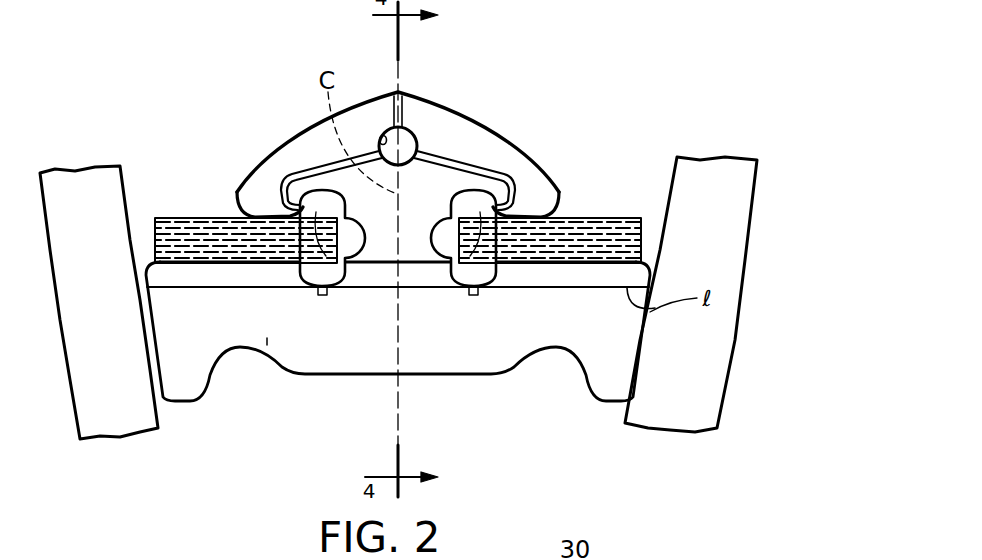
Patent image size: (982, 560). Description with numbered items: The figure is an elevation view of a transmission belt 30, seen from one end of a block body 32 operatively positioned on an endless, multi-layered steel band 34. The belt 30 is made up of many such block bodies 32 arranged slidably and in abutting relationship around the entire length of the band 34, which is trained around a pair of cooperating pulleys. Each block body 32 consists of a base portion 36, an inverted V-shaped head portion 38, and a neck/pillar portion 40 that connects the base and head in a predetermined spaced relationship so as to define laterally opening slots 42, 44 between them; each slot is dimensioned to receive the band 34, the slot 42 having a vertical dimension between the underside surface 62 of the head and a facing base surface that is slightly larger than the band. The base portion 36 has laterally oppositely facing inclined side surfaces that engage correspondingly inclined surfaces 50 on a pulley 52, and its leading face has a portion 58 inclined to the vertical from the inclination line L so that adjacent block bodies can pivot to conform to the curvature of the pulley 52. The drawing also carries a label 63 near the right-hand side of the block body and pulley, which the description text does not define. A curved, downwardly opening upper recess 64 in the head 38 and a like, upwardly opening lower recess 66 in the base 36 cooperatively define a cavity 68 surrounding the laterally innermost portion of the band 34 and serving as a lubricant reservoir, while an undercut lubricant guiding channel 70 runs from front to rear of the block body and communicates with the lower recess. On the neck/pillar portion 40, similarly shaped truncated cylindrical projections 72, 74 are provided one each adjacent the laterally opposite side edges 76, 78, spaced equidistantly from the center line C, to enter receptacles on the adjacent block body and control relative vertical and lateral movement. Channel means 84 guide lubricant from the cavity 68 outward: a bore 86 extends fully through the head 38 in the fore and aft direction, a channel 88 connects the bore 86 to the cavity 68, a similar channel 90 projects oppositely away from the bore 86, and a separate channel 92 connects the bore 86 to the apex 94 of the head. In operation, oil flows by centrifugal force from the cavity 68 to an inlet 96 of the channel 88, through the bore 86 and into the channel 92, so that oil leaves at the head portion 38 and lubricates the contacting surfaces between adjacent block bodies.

The transmission belt 30 is at (690, 133).
The block body 32 is at (464, 162).
The endless multi-layered steel band 34 is at (163, 222).
The base portion 36 is at (467, 358).
The inverted V-shaped head portion 38 is at (437, 122).
The neck/pillar portion 40 is at (480, 176).
The slot 42 is at (576, 222).
The slot 44 is at (242, 213).
The inclined surface 50 is at (162, 428).
The pulley 52 is at (119, 339).
The inclined portion of leading face 58 is at (267, 347).
The underside surface of the head 62 is at (560, 194).
The rail edge 63 is at (637, 243).
The upper recess 64 is at (500, 210).
The lower recess 66 is at (451, 282).
The cavity 68 is at (479, 292).
The undercut lubricant guiding channel 70 is at (453, 296).
The projection 72 is at (427, 270).
The projection 74 is at (305, 146).
The side edge 76 is at (515, 190).
The side edge 78 is at (304, 143).
The channel means 84 is at (424, 108).
The bore 86 is at (381, 134).
The channel 88 is at (428, 200).
The channel 90 is at (312, 194).
The channel 92 is at (394, 93).
The apex 94 is at (404, 93).
The inlet 96 is at (498, 292).